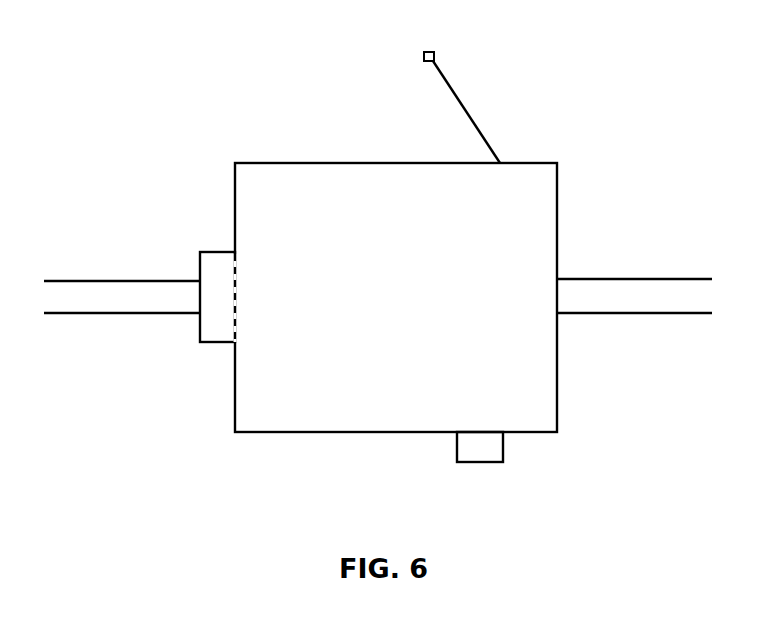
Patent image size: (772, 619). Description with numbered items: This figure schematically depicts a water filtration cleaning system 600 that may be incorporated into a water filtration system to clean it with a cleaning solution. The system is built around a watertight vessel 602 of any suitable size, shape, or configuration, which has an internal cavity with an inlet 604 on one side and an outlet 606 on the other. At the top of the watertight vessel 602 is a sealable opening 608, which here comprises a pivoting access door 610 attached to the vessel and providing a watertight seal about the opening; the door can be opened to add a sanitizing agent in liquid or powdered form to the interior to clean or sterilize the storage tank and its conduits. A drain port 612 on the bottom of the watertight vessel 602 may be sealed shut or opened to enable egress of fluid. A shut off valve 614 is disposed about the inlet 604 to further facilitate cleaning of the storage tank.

The water filtration cleaning system 600 is at (573, 48).
The watertight vessel 602 is at (249, 380).
The inlet 604 is at (122, 280).
The outlet 606 is at (634, 278).
The sealable opening 608 is at (401, 132).
The pivoting access door 610 is at (470, 111).
The drain port 612 is at (480, 463).
The shut off valve 614 is at (218, 251).